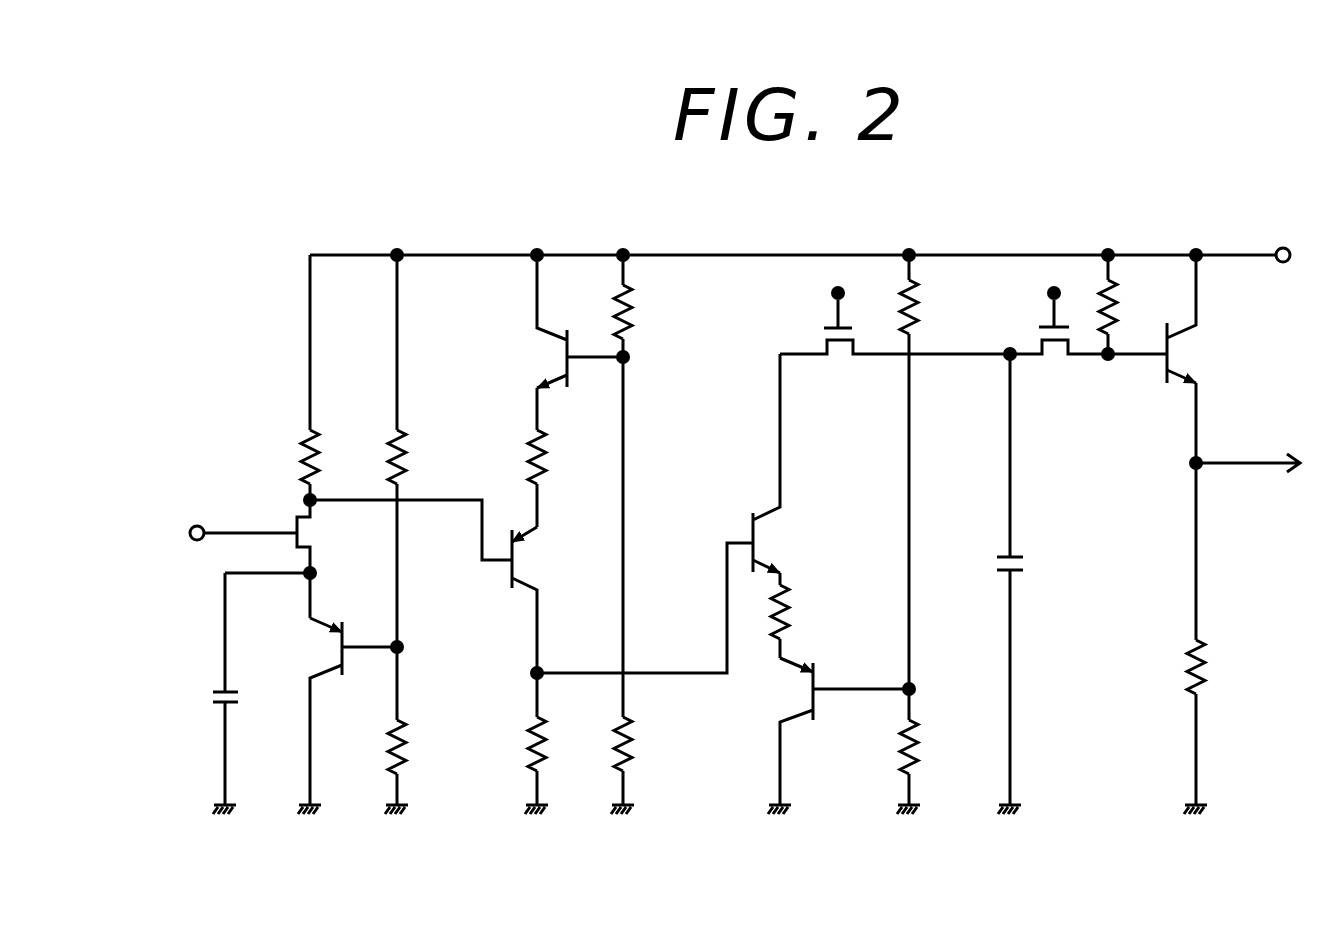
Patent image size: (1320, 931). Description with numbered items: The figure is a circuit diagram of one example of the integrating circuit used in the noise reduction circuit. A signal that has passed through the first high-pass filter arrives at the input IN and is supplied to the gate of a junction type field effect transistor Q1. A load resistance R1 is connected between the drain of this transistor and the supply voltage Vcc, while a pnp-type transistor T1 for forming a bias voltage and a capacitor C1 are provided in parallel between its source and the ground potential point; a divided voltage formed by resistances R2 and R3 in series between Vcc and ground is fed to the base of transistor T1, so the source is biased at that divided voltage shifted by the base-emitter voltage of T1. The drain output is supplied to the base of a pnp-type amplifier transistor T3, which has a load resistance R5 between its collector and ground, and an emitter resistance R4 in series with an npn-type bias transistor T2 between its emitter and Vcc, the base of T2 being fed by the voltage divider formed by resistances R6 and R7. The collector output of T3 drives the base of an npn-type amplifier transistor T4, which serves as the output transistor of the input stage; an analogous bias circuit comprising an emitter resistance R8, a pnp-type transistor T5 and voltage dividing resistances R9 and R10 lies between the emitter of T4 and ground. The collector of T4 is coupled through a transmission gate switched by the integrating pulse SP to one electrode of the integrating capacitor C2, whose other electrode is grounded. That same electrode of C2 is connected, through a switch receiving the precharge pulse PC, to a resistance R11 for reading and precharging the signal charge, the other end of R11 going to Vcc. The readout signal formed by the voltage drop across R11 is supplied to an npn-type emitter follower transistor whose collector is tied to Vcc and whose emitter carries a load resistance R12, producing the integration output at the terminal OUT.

The load resistance R1 is at (289, 377).
The resistance R2 is at (376, 454).
The resistance R3 is at (379, 730).
The emitter resistance R4 is at (514, 478).
The load resistance R5 is at (518, 743).
The resistance R6 is at (603, 309).
The resistance R7 is at (605, 585).
The emitter resistance R8 is at (762, 621).
The voltage dividing resistance R9 is at (893, 751).
The voltage dividing resistance R10 is at (939, 475).
The resistance for reading and resetting R11 is at (1136, 308).
The load resistance R12 is at (1171, 638).
The capacitor C1 is at (244, 693).
The capacitor C2 is at (991, 580).
The pnp-type transistor T1 is at (337, 693).
The npn-type transistor T2 is at (560, 342).
The pnp-type amplifier transistor T3 is at (442, 590).
The npn-type amplifier transistor T4 is at (678, 513).
The pnp-type transistor T5 is at (829, 736).
The junction type FET transistor Q1 is at (702, 433).
The integrating pulse SP is at (895, 316).
The precharge pulse PC is at (1007, 286).
The input IN is at (701, 397).
The output OUT is at (1254, 442).
The supply voltage Vcc is at (806, 232).